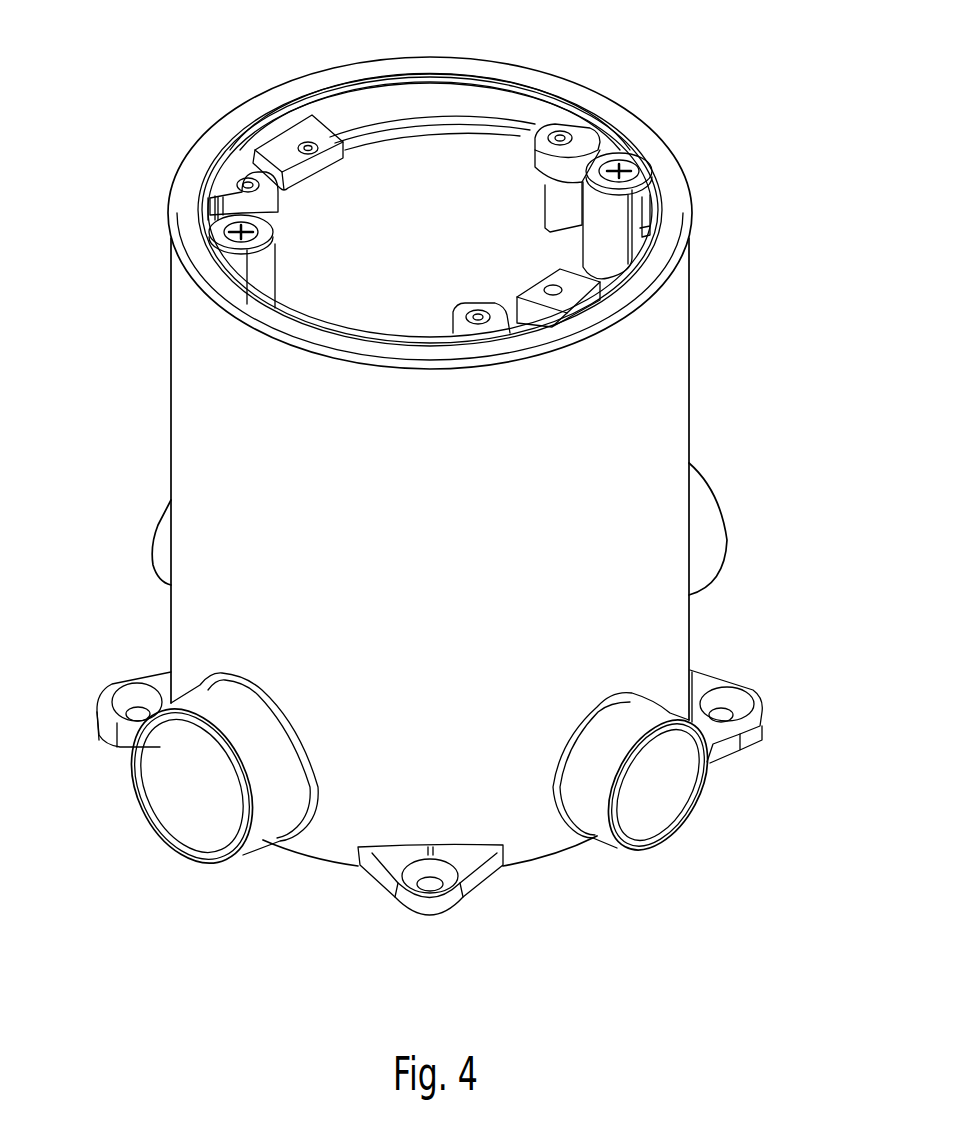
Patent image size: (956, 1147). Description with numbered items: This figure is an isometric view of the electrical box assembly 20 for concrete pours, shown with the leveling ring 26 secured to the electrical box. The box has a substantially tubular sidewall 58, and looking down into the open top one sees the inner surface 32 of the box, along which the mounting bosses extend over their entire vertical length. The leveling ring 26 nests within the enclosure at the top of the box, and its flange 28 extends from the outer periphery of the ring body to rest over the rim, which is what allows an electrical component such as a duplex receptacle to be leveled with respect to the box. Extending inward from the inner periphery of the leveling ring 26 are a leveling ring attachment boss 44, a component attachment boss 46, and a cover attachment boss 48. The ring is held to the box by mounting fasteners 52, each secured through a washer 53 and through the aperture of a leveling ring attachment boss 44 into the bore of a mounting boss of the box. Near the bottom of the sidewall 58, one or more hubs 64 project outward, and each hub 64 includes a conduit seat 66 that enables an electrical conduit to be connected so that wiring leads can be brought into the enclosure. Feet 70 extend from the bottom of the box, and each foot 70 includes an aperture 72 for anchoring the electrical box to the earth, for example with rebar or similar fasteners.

The electrical box assembly 20 is at (141, 96).
The leveling ring 26 is at (634, 317).
The flange 28 is at (608, 106).
The inner surface 32 is at (415, 288).
The leveling ring attachment boss 44 is at (610, 232).
The component attachment boss 46 is at (318, 172).
The cover attachment boss 48 is at (548, 165).
The mounting fastener 52 is at (210, 241).
The washer 53 is at (645, 171).
The sidewall 58 is at (447, 567).
The hub 64 is at (592, 803).
The conduit seat 66 is at (665, 797).
The foot 70 is at (432, 920).
The aperture 72 is at (730, 700).